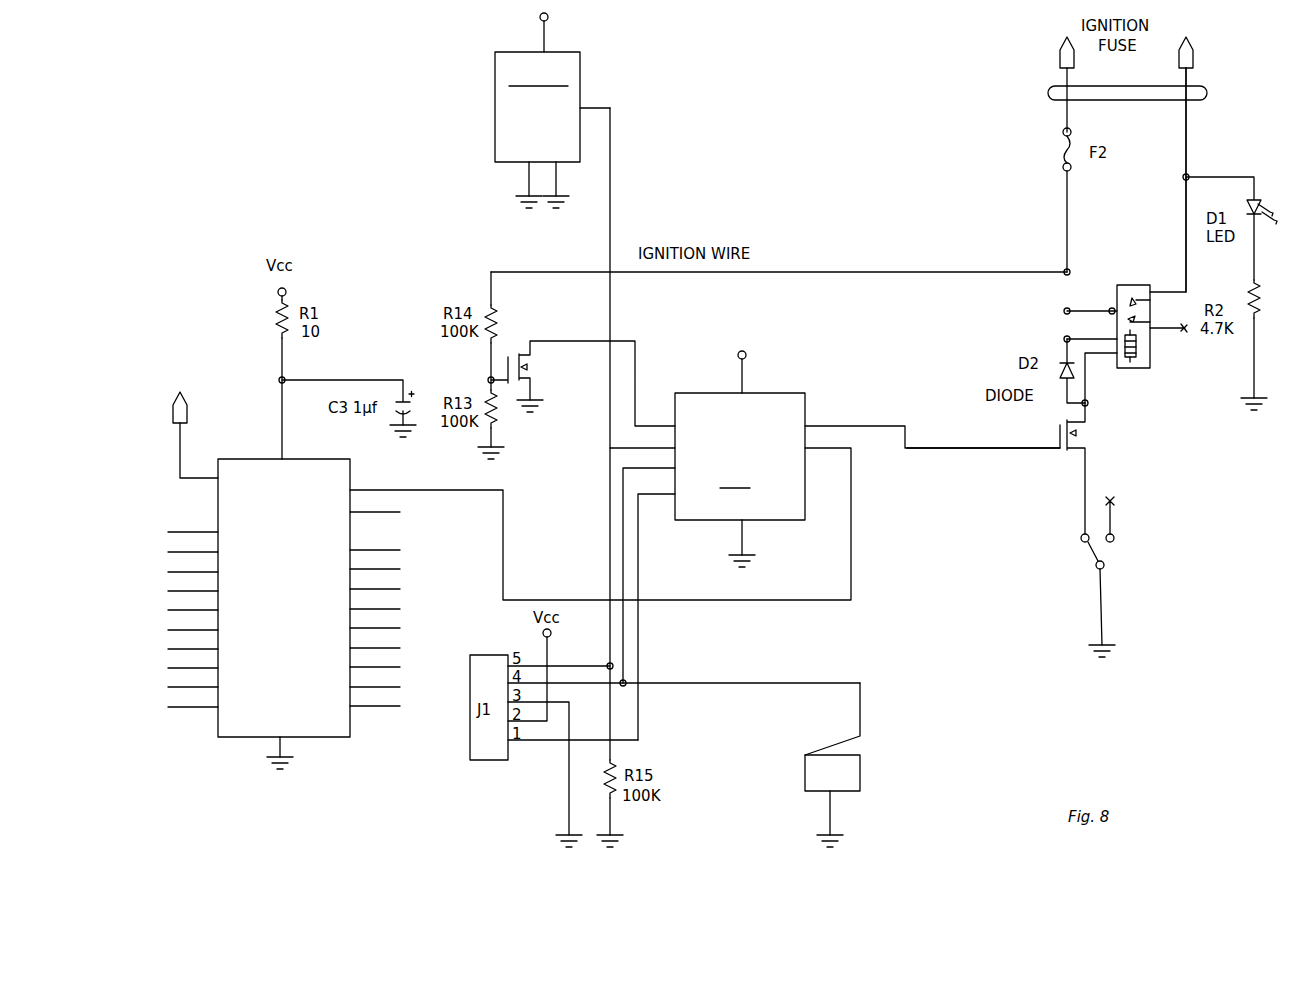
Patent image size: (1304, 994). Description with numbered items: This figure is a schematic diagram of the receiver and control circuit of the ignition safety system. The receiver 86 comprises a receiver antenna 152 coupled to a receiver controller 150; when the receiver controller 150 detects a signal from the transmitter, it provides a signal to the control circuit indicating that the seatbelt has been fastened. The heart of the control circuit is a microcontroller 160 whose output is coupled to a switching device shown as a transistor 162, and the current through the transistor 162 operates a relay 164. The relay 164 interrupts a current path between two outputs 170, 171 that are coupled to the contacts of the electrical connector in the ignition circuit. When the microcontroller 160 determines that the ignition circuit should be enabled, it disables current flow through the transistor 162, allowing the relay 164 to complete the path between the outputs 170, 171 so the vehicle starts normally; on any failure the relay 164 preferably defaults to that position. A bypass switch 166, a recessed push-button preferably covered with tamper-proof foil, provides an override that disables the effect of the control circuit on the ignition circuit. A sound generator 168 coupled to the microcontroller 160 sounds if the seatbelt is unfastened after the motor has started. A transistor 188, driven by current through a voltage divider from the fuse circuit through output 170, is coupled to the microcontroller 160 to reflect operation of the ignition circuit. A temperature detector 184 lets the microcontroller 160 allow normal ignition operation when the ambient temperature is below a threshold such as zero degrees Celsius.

The receiver 86 is at (316, 777).
The receiver controller 150 is at (244, 738).
The receiver antenna 152 is at (188, 405).
The microcontroller 160 is at (782, 393).
The transistor 162 is at (1060, 452).
The relay 164 is at (1150, 366).
The bypass switch 166 is at (1095, 558).
The sound generator 168 is at (805, 770).
The output 170 is at (1058, 52).
The output 171 is at (1195, 50).
The temperature detector 184 is at (580, 74).
The transistor 188 is at (516, 350).